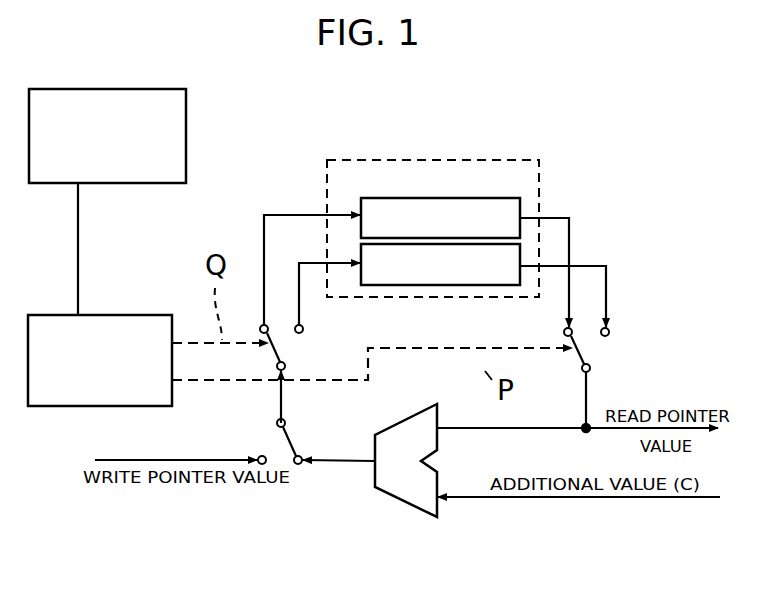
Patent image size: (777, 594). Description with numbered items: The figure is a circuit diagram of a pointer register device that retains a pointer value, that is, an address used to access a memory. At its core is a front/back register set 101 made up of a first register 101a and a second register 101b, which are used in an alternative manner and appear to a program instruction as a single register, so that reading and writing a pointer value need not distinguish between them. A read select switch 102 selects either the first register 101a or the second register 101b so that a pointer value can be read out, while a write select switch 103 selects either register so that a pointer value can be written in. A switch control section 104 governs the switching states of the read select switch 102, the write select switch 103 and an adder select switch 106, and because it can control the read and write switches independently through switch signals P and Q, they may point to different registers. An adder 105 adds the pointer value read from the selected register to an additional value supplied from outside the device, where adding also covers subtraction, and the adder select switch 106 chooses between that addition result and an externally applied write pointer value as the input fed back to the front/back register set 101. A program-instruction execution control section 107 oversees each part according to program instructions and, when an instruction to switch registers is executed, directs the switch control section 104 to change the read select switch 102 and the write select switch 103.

The front/back register set 101 is at (425, 198).
The first register 101a is at (370, 198).
The second register 101b is at (358, 252).
The read select switch 102 is at (591, 368).
The write select switch 103 is at (278, 368).
The switch control section 104 is at (120, 315).
The adder 105 is at (395, 502).
The adder select switch 106 is at (278, 425).
The program-instruction execution control section 107 is at (100, 89).